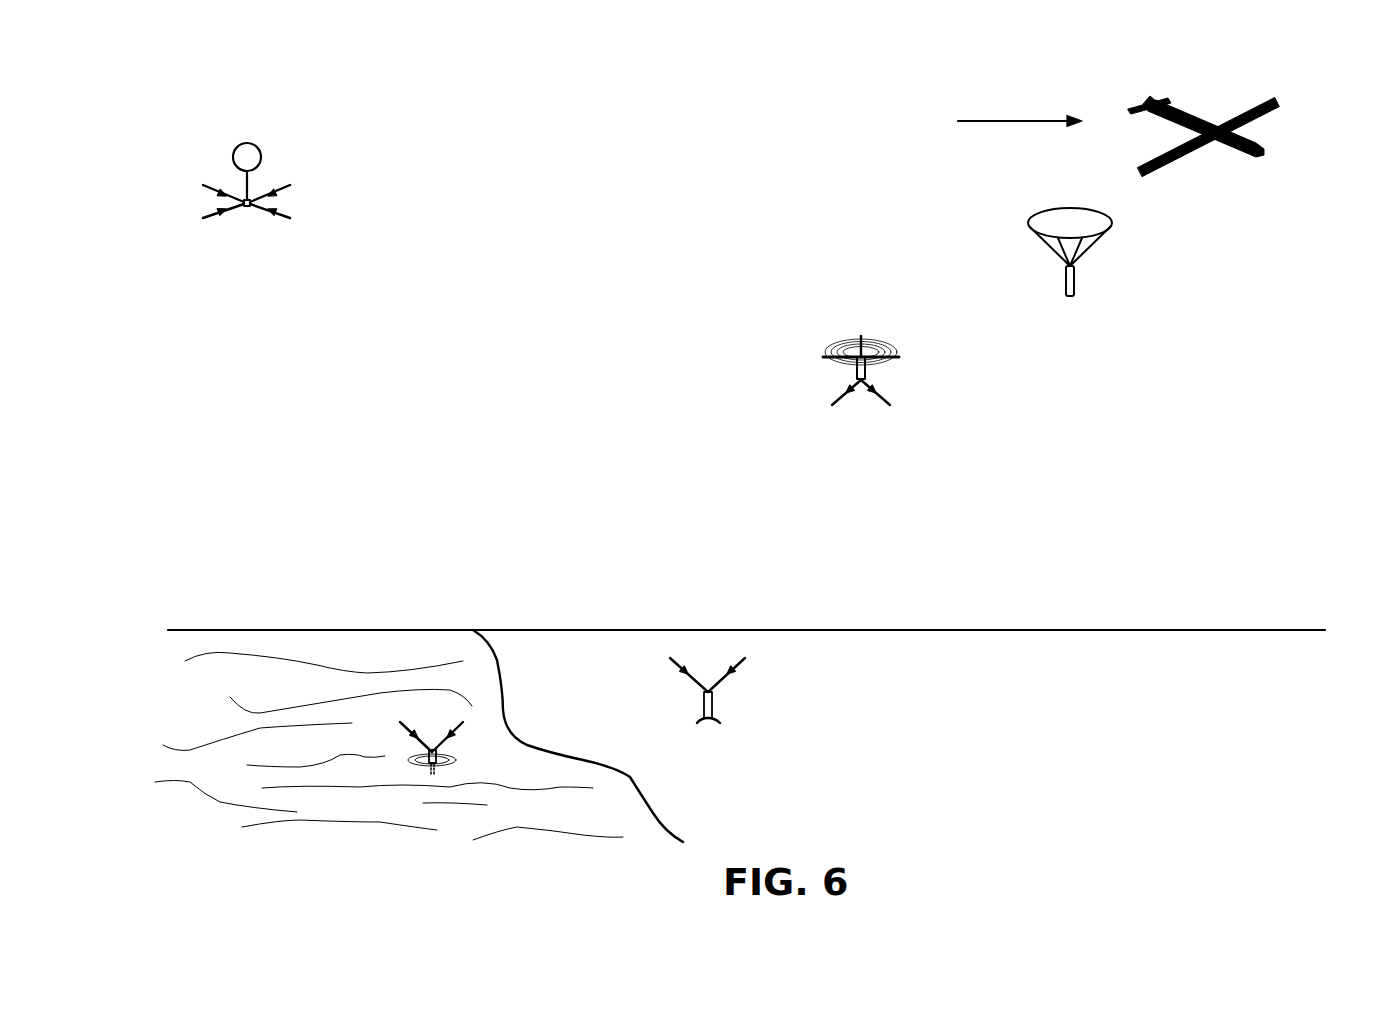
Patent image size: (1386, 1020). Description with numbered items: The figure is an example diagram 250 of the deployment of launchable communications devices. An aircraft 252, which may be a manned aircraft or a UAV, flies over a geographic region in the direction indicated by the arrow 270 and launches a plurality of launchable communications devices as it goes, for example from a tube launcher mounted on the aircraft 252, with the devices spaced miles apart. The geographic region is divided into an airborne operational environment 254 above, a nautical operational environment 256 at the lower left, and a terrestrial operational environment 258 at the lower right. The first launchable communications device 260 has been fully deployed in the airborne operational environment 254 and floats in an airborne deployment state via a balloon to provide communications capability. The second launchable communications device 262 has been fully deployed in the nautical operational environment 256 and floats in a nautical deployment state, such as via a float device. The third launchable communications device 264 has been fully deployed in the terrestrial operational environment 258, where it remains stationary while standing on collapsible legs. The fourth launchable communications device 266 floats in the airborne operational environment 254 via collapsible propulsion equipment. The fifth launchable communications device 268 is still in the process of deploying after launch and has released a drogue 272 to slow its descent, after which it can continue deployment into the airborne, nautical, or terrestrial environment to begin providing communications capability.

The diagram 250 is at (222, 87).
The aircraft 252 is at (1177, 163).
The airborne operational environment 254 is at (604, 282).
The nautical operational environment 256 is at (254, 694).
The terrestrial operational environment 258 is at (854, 716).
The first launchable communications device 260 is at (291, 140).
The second launchable communications device 262 is at (382, 726).
The third launchable communications device 264 is at (684, 728).
The fourth launchable communications device 266 is at (820, 328).
The fifth launchable communications device 268 is at (1096, 313).
The arrow 270 is at (990, 121).
The drogue 272 is at (1034, 216).